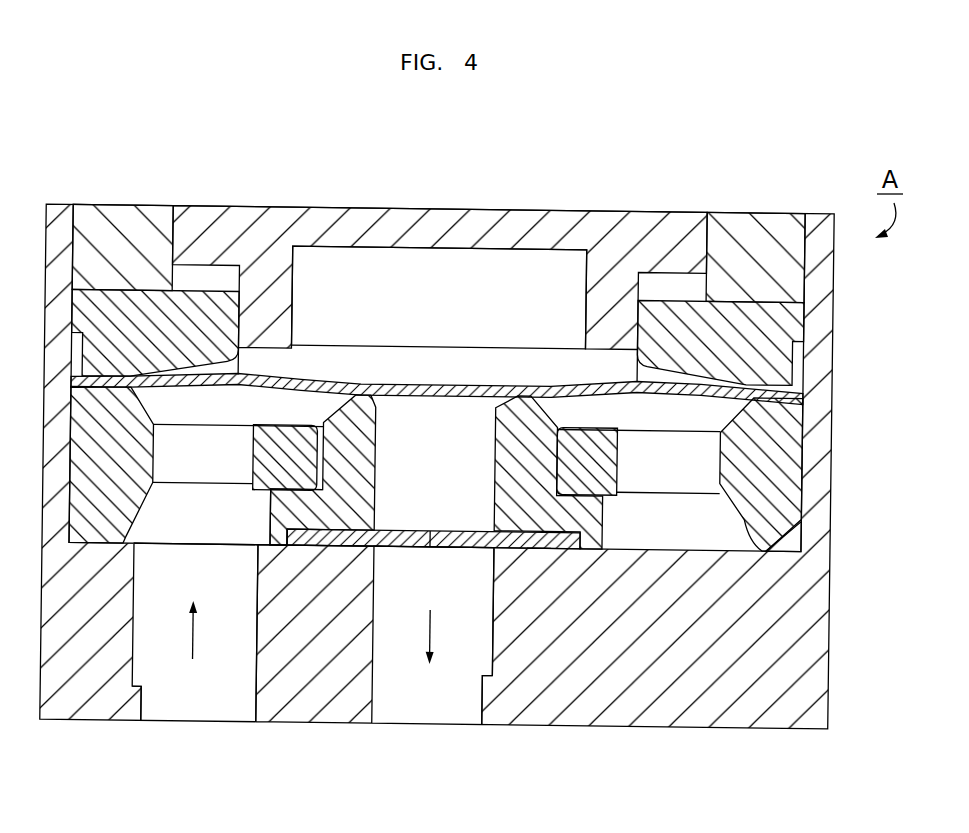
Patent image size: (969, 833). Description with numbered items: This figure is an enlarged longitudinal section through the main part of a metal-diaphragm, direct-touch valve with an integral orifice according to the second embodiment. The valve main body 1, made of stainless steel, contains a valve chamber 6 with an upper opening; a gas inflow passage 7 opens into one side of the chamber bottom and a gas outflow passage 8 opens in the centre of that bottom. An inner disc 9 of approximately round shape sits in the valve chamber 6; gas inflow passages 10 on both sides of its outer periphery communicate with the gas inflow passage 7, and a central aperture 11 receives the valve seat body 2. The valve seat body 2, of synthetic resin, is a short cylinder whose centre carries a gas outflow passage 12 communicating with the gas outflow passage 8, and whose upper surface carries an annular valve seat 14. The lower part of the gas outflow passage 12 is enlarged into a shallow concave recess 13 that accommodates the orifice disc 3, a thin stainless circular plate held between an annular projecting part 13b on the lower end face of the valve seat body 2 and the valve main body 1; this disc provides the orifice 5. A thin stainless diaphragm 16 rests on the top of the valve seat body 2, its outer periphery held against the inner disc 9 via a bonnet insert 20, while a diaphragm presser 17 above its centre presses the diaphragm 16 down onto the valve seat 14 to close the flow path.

The valve main body 1 is at (688, 734).
The valve seat body 2 is at (259, 528).
The orifice disc 3 is at (388, 556).
The orifice 5 is at (433, 548).
The valve chamber 6 is at (773, 553).
The gas inflow passage 7 is at (138, 692).
The gas outflow passage 8 is at (493, 676).
The inner disc 9 is at (102, 512).
The gas inflow passages 10 is at (252, 445).
The aperture 11 is at (329, 548).
The gas outflow passage 12 is at (497, 445).
The concave recess 13 is at (580, 549).
The annular projecting part 13b is at (540, 549).
The annular valve seat 14 is at (355, 397).
The diaphragm 16 is at (563, 385).
The diaphragm presser 17 is at (450, 287).
The bonnet insert 20 is at (760, 333).